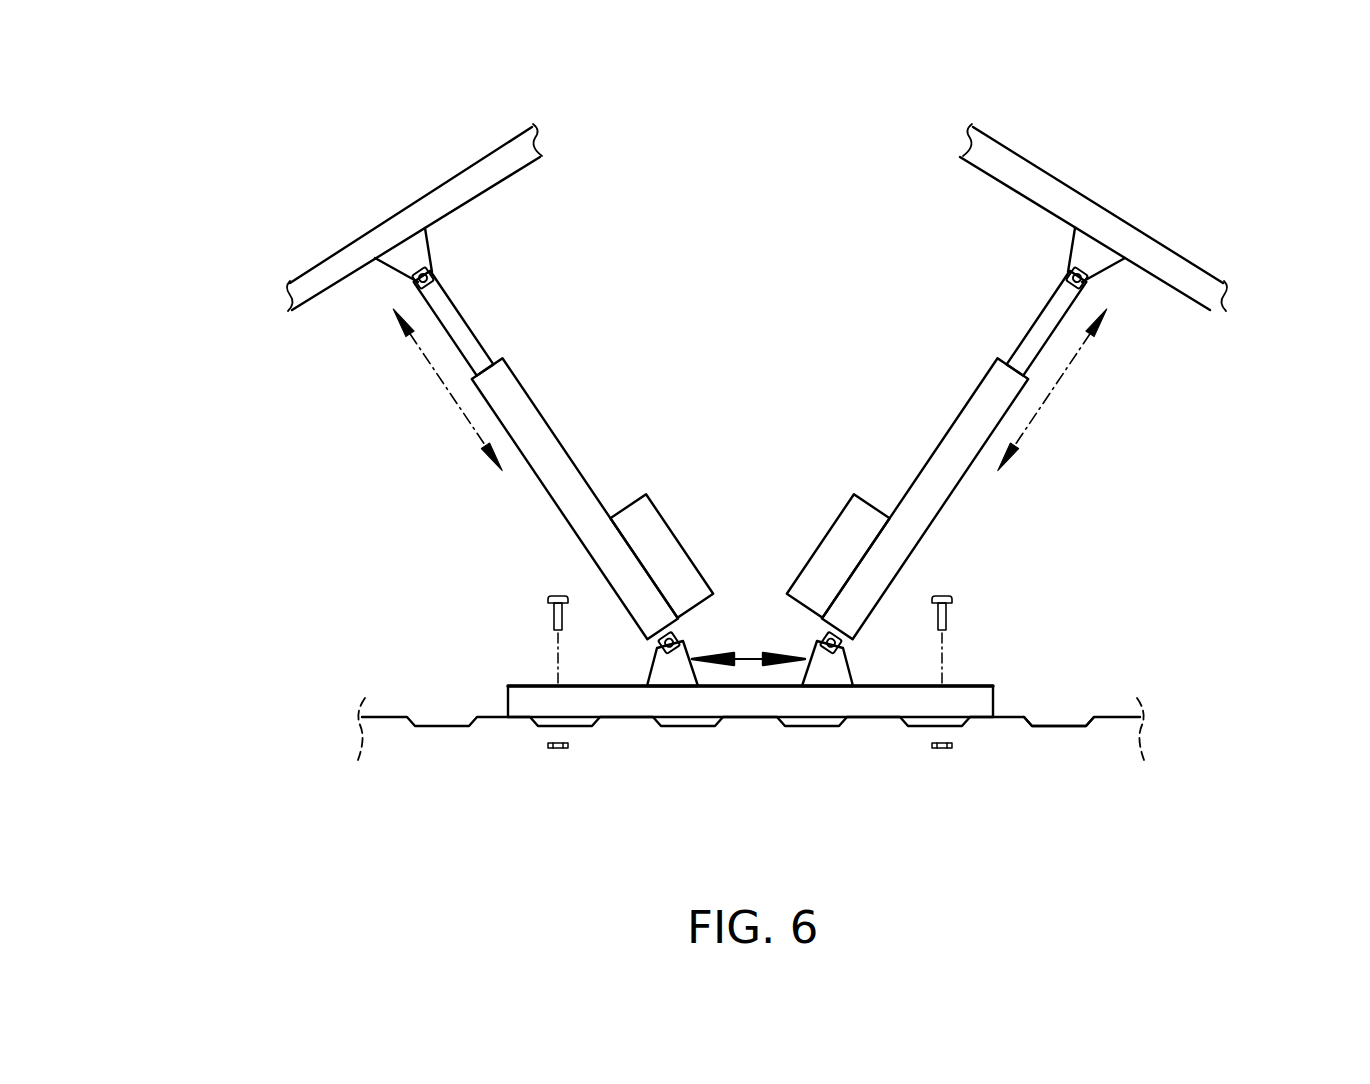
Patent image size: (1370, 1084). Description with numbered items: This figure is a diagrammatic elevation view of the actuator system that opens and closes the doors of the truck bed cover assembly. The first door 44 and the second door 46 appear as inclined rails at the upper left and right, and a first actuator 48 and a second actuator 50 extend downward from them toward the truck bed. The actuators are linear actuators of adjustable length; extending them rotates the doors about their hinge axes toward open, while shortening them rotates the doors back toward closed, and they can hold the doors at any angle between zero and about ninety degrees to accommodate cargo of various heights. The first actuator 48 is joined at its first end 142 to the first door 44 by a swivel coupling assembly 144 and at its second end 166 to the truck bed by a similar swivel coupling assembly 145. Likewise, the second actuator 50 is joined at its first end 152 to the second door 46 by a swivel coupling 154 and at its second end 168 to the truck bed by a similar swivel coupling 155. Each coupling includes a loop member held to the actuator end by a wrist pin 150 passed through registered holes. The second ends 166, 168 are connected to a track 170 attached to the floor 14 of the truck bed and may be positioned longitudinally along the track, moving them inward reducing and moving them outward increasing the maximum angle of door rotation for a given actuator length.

The floor 14 is at (435, 727).
The first door 44 is at (1047, 181).
The second door 46 is at (453, 181).
The first actuator 48 is at (941, 417).
The second actuator 50 is at (562, 416).
The first end 142 is at (1077, 297).
The swivel coupling assembly 144 is at (1075, 229).
The swivel coupling assembly 145 is at (843, 680).
The wrist pin 150 is at (433, 271).
The first end 152 is at (423, 297).
The swivel coupling 154 is at (430, 233).
The swivel coupling 155 is at (657, 680).
The second end 166 is at (853, 655).
The second end 168 is at (647, 655).
The track 170 is at (1067, 727).